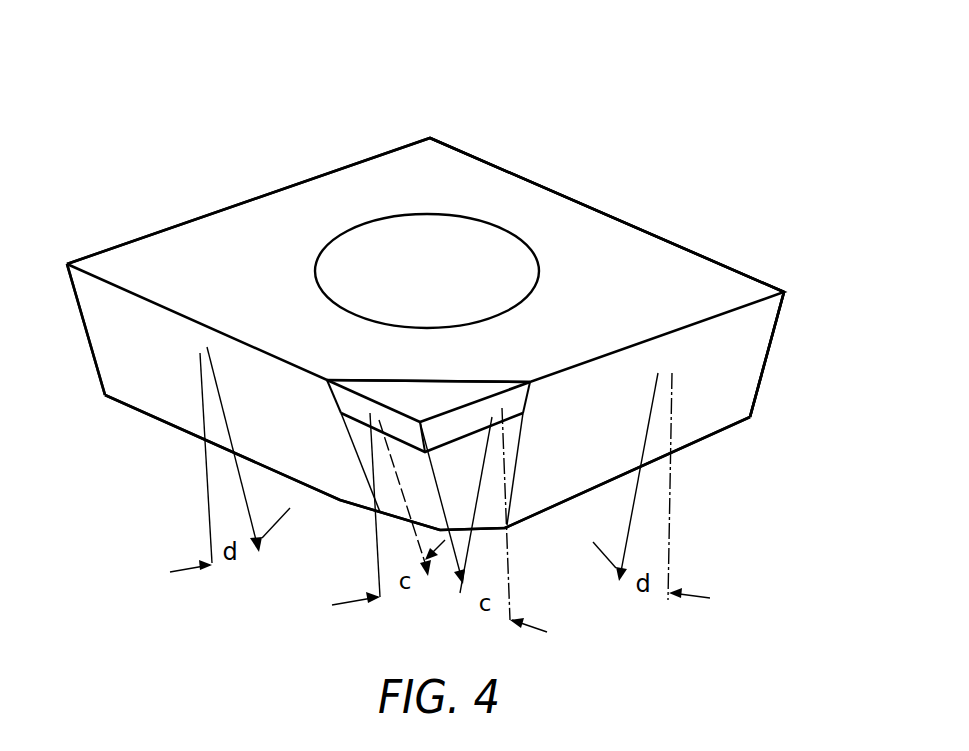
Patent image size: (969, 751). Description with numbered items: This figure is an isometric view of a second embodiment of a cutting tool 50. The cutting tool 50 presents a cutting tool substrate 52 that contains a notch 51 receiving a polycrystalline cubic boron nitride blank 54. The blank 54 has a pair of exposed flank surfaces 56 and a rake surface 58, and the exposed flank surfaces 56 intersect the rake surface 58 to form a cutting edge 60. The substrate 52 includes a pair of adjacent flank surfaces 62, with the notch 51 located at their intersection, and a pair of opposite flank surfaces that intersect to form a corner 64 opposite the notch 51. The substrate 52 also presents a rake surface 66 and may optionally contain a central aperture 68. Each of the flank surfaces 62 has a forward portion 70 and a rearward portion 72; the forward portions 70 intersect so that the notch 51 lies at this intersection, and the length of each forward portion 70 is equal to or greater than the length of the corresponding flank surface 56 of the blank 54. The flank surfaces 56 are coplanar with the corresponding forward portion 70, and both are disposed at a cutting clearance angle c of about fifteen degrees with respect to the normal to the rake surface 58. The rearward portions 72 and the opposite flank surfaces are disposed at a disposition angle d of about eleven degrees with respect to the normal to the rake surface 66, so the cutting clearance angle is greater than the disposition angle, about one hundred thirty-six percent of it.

The cutting tool 50 is at (670, 198).
The notch 51 is at (367, 377).
The cutting tool substrate 52 is at (755, 325).
The polycrystalline cubic boron nitride (PcBN) blank 54 is at (463, 390).
The exposed flank surfaces 56 is at (352, 428).
The rake surface 58 is at (427, 388).
The cutting edge 60 is at (357, 390).
The adjacent flank surfaces 62 is at (172, 413).
The corner 64 is at (430, 138).
The rake surface 66 is at (508, 190).
The central aperture 68 is at (423, 240).
The forward portion 70 is at (365, 467).
The rearward portion 72 is at (138, 378).